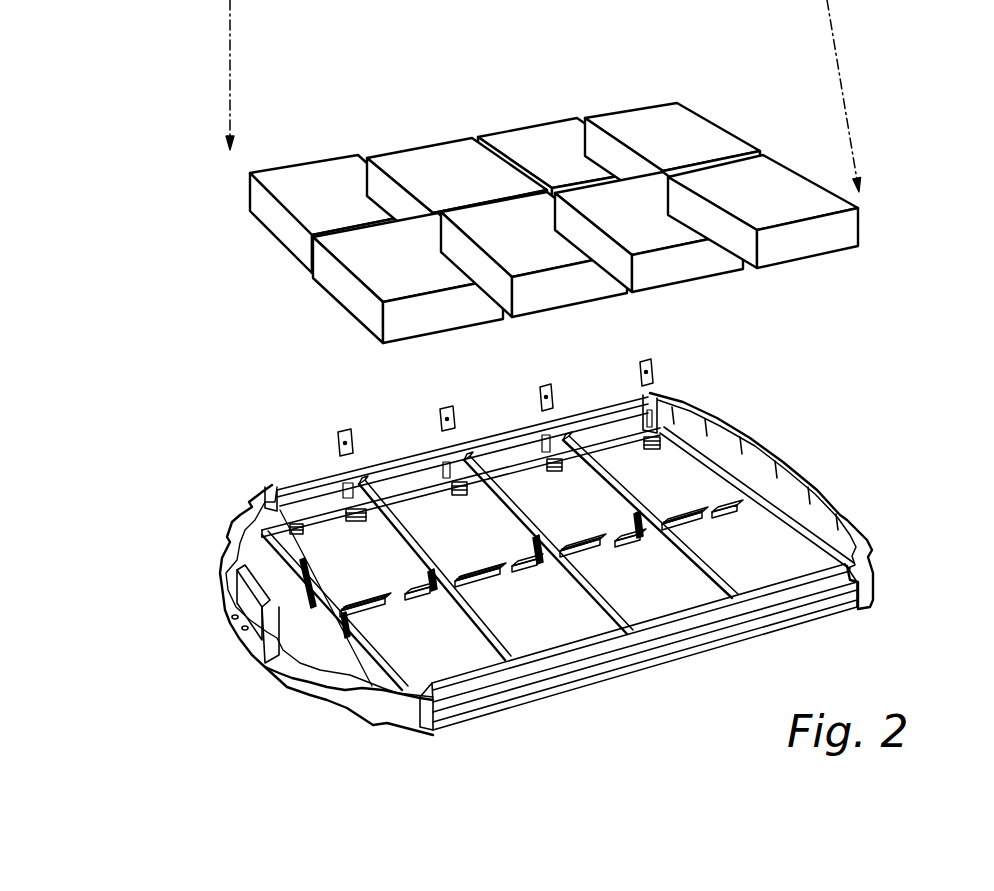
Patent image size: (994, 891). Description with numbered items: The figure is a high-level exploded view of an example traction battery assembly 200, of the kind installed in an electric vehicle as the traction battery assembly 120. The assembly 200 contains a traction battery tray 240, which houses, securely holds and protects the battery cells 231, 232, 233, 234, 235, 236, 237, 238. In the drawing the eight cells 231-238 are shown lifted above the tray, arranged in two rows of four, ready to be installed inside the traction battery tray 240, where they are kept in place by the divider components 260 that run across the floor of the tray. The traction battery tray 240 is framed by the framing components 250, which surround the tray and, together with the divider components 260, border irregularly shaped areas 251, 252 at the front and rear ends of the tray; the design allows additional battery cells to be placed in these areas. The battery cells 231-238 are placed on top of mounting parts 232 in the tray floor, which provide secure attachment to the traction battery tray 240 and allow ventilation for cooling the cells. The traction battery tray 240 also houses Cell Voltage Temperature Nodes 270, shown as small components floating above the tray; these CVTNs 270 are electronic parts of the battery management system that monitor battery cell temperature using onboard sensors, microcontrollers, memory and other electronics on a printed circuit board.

The traction battery assembly 120 is at (462, 380).
The traction battery assembly 200 is at (186, 190).
The battery cell 231 is at (306, 207).
The battery cell / mounting parts 232 is at (426, 192).
The battery cell 233 is at (544, 168).
The battery cell 234 is at (649, 148).
The battery cell 235 is at (383, 275).
The battery cell 236 is at (509, 248).
The battery cell 237 is at (629, 225).
The battery cell 238 is at (738, 205).
The traction battery tray 240 is at (754, 107).
The framing components 250 is at (530, 535).
The irregularly shaped area 251 is at (300, 635).
The irregularly shaped area 252 is at (753, 480).
The divider components 260 is at (392, 675).
The Cell Voltage Temperature Node (CVTN) 270 is at (337, 431).